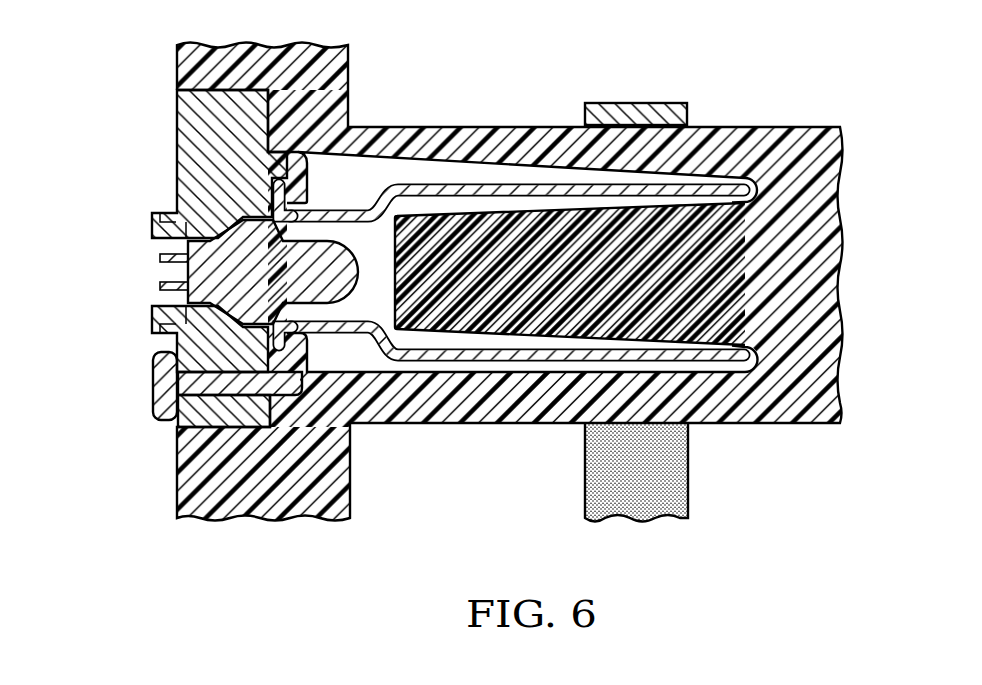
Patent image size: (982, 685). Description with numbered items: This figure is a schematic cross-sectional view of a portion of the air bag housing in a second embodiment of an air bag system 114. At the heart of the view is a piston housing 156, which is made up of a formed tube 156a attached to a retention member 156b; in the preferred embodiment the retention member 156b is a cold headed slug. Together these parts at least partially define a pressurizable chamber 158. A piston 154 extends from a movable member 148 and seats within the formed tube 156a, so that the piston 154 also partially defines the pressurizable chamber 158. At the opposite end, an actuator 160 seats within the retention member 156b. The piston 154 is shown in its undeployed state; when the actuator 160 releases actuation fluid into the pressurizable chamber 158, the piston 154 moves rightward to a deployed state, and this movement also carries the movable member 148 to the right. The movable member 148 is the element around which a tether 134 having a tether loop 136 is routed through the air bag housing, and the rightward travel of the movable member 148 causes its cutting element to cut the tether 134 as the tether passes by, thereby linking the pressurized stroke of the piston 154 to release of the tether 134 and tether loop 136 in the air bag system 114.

The air bag system 114 is at (543, 272).
The tether 134 is at (677, 321).
The tether loop 136 is at (638, 103).
The movable member 148 is at (510, 282).
The piston 154 is at (557, 208).
The piston housing 156 is at (511, 189).
The formed tube 156a is at (445, 181).
The retention member 156b is at (350, 127).
The pressurizable chamber 158 is at (374, 269).
The actuator 160 is at (165, 276).